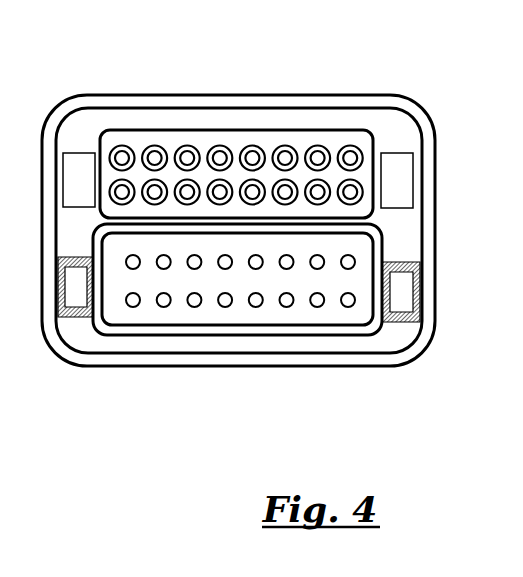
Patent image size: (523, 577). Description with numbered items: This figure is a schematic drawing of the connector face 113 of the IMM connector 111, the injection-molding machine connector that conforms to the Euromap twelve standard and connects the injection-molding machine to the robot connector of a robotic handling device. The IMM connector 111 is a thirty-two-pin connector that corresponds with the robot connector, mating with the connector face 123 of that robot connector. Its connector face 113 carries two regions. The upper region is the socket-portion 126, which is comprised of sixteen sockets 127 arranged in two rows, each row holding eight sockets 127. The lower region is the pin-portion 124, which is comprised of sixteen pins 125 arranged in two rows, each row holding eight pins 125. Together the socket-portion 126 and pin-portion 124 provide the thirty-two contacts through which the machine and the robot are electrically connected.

The IMM connector 111 is at (345, 373).
The connector face 113 is at (225, 345).
The connector face 123 is at (240, 120).
The pin-portion 124 is at (138, 315).
The pins 125 is at (256, 269).
The socket-portion 126 is at (337, 143).
The sockets 127 is at (165, 190).